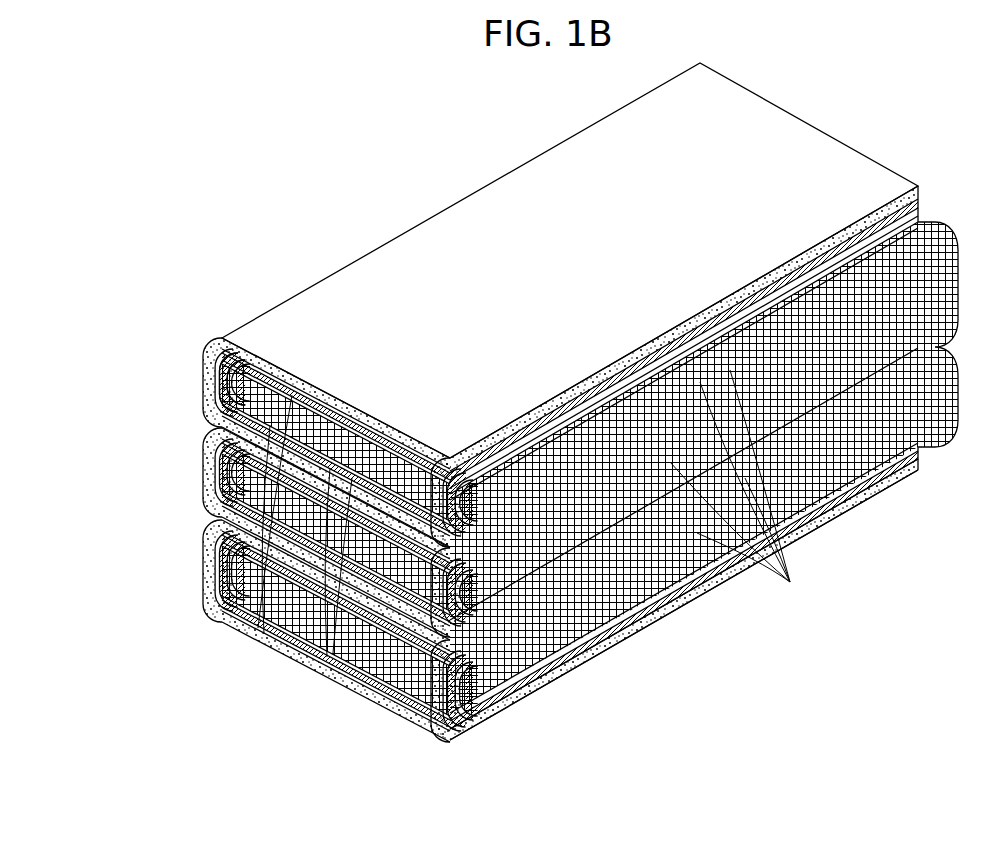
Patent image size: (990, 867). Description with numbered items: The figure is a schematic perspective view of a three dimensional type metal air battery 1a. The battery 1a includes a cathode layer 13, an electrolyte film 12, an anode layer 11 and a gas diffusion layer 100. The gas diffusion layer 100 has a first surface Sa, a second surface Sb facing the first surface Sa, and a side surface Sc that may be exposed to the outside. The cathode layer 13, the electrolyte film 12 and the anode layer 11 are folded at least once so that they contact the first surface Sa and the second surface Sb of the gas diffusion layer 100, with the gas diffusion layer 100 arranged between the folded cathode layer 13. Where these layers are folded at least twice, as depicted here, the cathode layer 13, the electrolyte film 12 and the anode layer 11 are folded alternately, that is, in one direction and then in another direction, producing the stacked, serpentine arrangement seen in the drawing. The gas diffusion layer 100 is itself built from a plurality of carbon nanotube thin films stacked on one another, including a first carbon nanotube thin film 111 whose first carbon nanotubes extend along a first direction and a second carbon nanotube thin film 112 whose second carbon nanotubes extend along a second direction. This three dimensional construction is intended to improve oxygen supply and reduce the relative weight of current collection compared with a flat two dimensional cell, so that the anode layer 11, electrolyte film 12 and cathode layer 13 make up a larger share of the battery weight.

The three dimensional type metal air battery 1a is at (350, 156).
The anode layer 11 is at (212, 343).
The electrolyte film 12 is at (212, 368).
The cathode layer 13 is at (212, 393).
The gas diffusion layer 100 is at (520, 660).
The first carbon nanotube thin film 111 is at (413, 697).
The second carbon nanotube thin film 112 is at (353, 683).
The first surface Sa is at (264, 634).
The second surface Sb is at (333, 653).
The side surface Sc is at (741, 492).